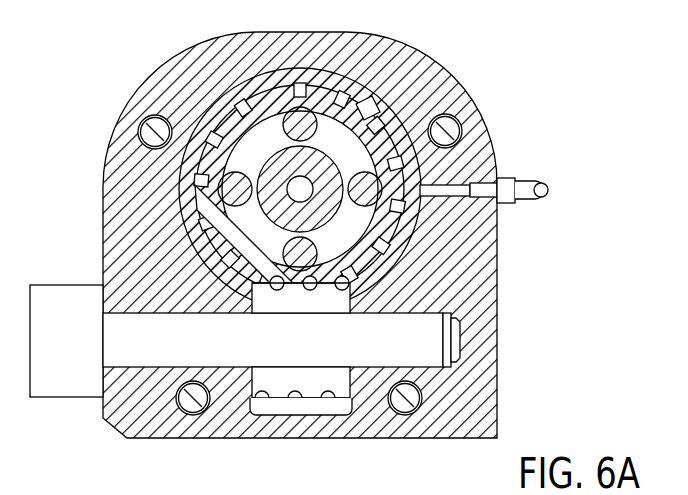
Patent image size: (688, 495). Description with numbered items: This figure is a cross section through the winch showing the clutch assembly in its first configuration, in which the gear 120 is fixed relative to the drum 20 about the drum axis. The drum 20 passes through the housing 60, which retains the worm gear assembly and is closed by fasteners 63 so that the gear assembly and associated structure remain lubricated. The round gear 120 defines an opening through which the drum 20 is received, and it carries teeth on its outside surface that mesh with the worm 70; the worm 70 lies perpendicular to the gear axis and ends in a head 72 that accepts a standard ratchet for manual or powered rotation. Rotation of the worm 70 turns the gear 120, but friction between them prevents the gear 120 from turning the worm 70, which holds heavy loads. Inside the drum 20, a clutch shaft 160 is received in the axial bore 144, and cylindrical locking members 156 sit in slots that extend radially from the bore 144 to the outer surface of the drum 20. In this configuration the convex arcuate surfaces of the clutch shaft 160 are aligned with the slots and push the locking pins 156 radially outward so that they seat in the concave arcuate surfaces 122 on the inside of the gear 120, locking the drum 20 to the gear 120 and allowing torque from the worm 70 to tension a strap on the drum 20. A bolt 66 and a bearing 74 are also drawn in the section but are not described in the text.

The drum 20 is at (347, 147).
The housing 60 is at (408, 165).
The fasteners 63 is at (142, 125).
The bolt 66 is at (546, 184).
The worm 70 is at (150, 348).
The head 72 is at (68, 355).
The bearing 74 is at (287, 372).
The gear 120 is at (410, 242).
The concave arcuate surfaces 122 is at (400, 226).
The bore 144 is at (360, 100).
The locking members 156 is at (245, 150).
The clutch shaft 160 is at (268, 168).